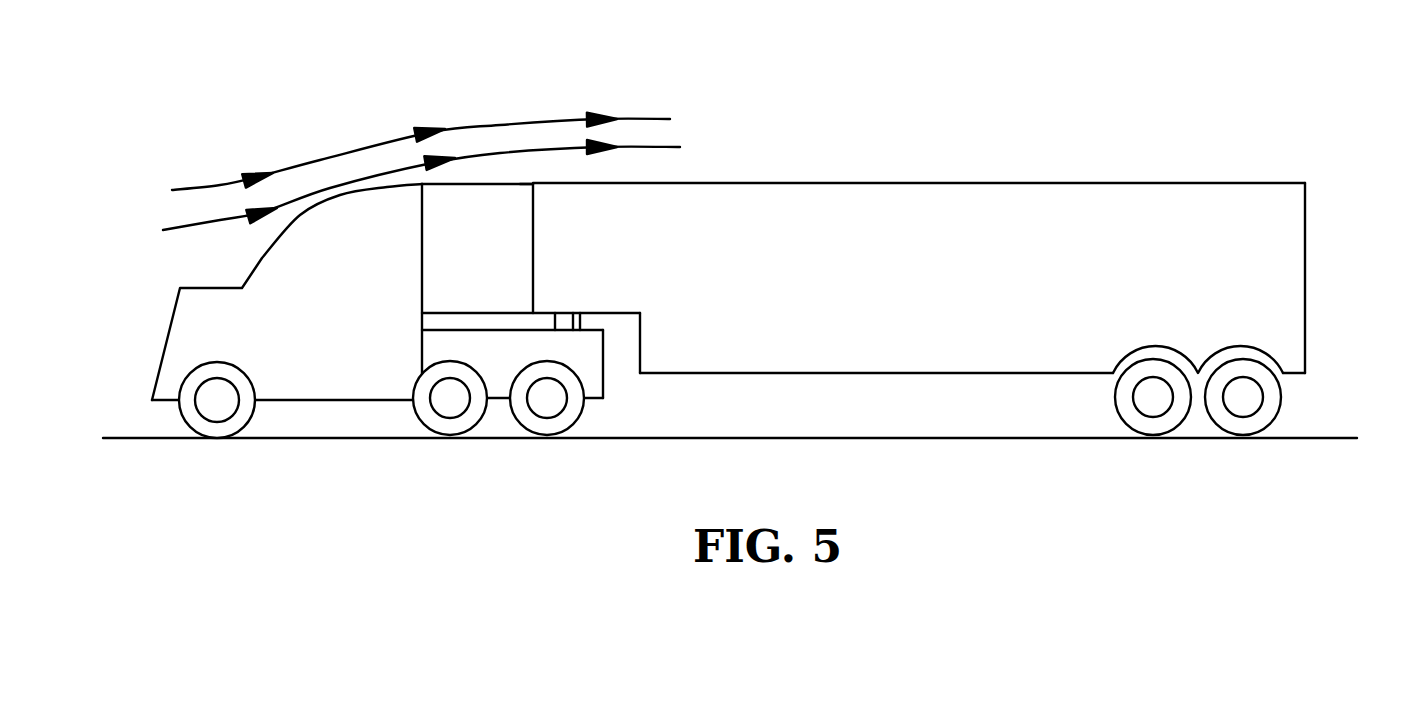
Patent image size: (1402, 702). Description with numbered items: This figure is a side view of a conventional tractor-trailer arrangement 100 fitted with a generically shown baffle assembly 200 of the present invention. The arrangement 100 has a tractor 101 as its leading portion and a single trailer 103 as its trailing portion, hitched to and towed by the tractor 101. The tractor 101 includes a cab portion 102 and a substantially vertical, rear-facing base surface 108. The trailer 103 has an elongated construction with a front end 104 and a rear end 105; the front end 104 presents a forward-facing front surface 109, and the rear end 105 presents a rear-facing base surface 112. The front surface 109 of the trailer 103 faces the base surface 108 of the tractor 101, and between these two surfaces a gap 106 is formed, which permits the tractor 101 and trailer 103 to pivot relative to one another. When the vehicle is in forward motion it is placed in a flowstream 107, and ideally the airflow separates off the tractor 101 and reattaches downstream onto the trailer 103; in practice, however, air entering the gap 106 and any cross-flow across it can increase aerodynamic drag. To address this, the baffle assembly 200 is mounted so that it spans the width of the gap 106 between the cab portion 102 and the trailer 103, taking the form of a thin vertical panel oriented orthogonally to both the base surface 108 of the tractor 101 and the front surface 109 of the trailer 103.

The tractor-trailer arrangement 100 is at (877, 120).
The tractor 101 is at (157, 373).
The cab portion 102 is at (362, 283).
The trailer 103 is at (935, 273).
The front end 104 is at (536, 220).
The rear end 105 is at (1243, 182).
The gap 106 is at (445, 317).
The flowstream 107 is at (500, 152).
The base surface 108 is at (425, 282).
The front surface 109 is at (534, 268).
The base surface 112 is at (1305, 237).
The baffle assembly 200 is at (514, 222).